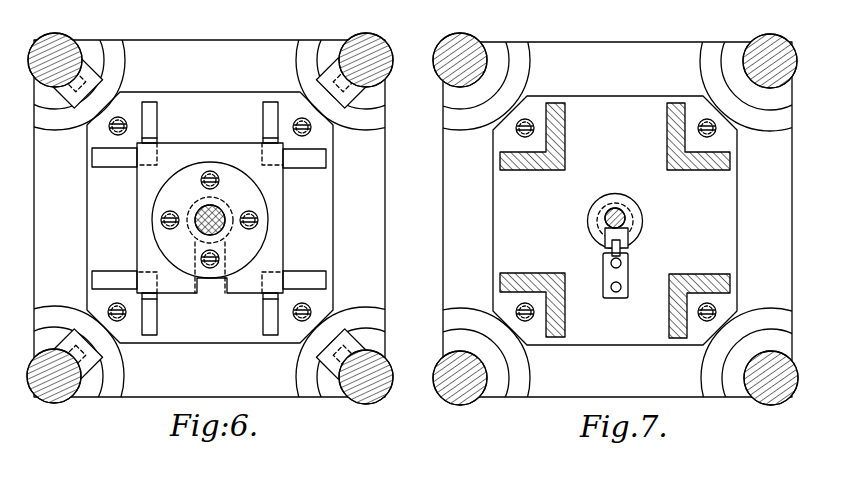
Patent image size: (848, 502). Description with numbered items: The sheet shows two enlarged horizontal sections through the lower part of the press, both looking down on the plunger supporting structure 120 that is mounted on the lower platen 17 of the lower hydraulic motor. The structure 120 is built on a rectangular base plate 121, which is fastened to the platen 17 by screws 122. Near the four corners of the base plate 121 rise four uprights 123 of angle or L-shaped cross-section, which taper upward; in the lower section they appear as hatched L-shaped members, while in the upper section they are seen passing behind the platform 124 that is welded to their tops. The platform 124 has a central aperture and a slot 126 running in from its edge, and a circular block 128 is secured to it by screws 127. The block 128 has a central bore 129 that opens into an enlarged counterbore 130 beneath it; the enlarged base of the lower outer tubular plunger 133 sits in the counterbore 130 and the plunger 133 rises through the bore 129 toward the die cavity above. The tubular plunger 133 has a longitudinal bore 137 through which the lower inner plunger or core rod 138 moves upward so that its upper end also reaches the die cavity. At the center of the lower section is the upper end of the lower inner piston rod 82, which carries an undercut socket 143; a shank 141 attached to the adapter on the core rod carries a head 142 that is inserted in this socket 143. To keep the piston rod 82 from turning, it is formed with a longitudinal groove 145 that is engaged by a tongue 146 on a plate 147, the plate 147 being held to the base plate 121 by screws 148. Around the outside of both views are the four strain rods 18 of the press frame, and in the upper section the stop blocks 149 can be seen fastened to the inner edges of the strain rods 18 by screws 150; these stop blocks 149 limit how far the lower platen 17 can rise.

In FIG. 6, the platen 17 is at (211, 40).
In FIG. 7, the platen 17 is at (608, 48).
In FIG. 6, the strain rods 18 is at (56, 33).
In FIG. 7, the strain rods 18 is at (464, 36).
In FIG. 7, the lower inner piston rod 82 is at (640, 199).
In FIG. 6, the plunger supporting structure 120 is at (338, 220).
In FIG. 7, the plunger supporting structure 120 is at (741, 225).
In FIG. 6, the rectangular base plate 121 is at (229, 92).
In FIG. 7, the rectangular base plate 121 is at (626, 98).
In FIG. 6, the screws 122 is at (312, 135).
In FIG. 7, the screws 122 is at (516, 129).
In FIG. 6, the uprights 123 is at (150, 128).
In FIG. 7, the uprights 123 is at (561, 147).
In FIG. 6, the platform 124 is at (274, 187).
In FIG. 6, the slot 126 is at (219, 293).
In FIG. 6, the screws 127 is at (168, 230).
In FIG. 6, the circular block 128 is at (232, 176).
In FIG. 6, the central bore 129 is at (213, 208).
In FIG. 6, the counterbore 130 is at (194, 207).
In FIG. 6, the lower outer tubular plunger 133 is at (200, 224).
In FIG. 6, the longitudinal bore 137 is at (249, 219).
In FIG. 6, the core rod 138 is at (222, 231).
In FIG. 7, the shank 141 is at (624, 217).
In FIG. 7, the head 142 is at (629, 234).
In FIG. 7, the undercut socket 143 is at (636, 230).
In FIG. 7, the longitudinal groove 145 is at (629, 247).
In FIG. 7, the tongue 146 is at (621, 251).
In FIG. 7, the plate 147 is at (604, 270).
In FIG. 7, the screws 148 is at (609, 288).
In FIG. 6, the stop blocks 149 is at (383, 95).
In FIG. 6, the screws 150 is at (334, 64).